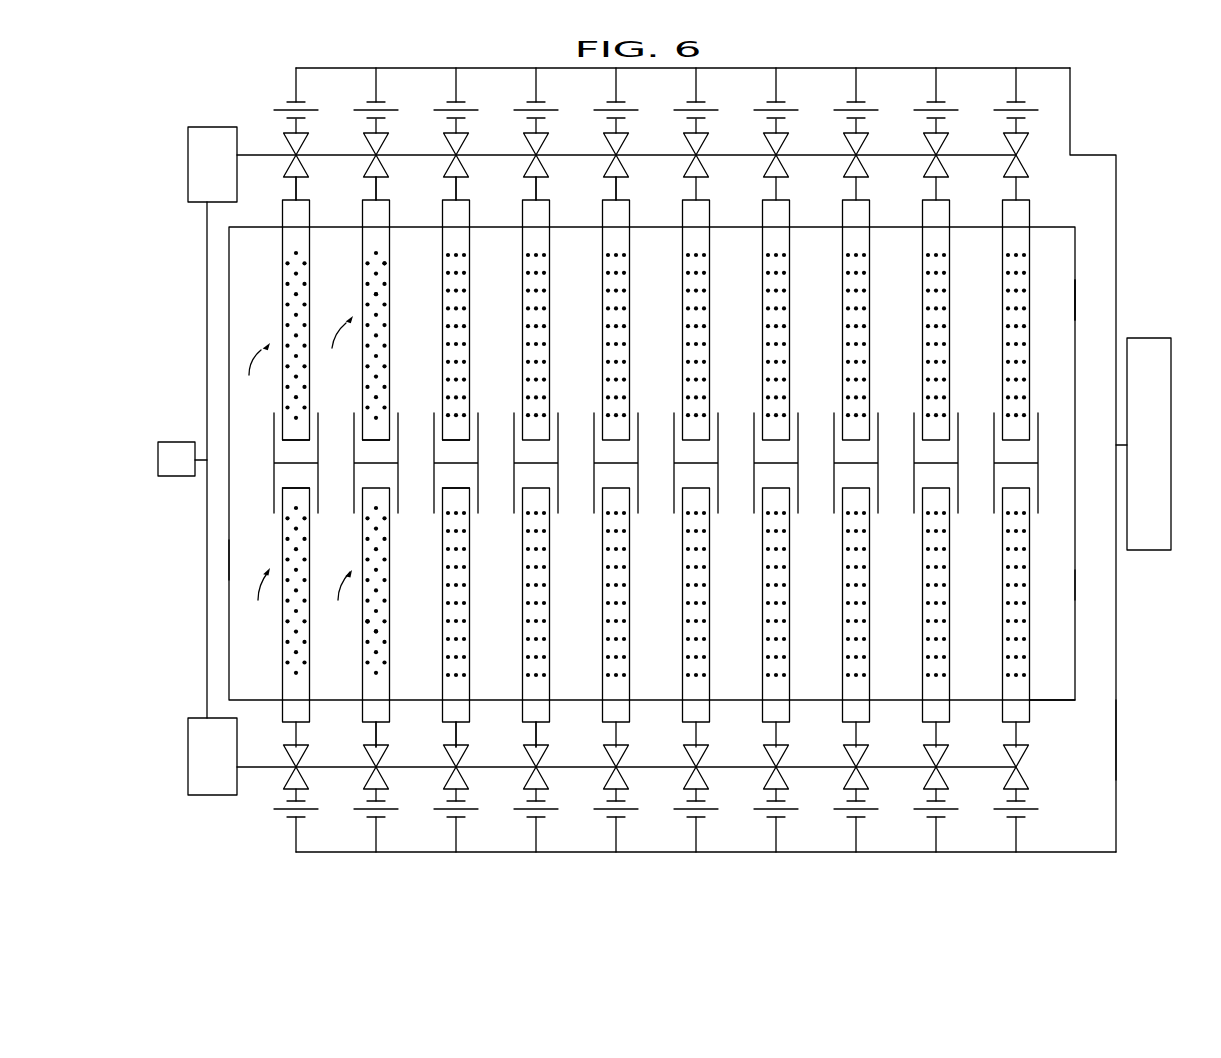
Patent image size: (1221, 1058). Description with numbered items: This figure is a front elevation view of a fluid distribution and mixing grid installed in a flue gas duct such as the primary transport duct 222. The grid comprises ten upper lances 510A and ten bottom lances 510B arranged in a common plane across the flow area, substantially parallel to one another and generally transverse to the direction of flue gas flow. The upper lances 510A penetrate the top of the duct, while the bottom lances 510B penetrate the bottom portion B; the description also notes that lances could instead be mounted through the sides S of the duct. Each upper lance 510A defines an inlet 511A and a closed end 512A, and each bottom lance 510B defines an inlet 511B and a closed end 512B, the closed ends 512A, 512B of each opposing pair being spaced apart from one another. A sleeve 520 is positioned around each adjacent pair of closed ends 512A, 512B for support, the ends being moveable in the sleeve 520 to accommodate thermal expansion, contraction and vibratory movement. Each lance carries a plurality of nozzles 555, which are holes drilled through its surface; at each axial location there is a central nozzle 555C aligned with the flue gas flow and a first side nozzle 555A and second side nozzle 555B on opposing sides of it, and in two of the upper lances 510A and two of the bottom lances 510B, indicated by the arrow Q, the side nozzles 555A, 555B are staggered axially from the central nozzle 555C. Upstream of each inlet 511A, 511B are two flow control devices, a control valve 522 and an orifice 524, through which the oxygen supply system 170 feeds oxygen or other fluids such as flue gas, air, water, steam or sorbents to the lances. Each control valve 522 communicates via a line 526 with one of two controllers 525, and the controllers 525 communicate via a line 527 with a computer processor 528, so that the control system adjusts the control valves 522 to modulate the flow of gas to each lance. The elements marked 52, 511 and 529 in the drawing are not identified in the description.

The substrate processing apparatus 52 is at (1116, 732).
The oxygen supply system 170 is at (1144, 338).
The primary transport duct 222 is at (1078, 298).
The upper lances 510A is at (282, 318).
The bottom lances 510B is at (283, 643).
The gas distribution housing 511 is at (1042, 227).
The inlet 511A is at (302, 202).
The inlet 511B is at (388, 722).
The closed end 512A is at (298, 442).
The closed end 512B is at (283, 485).
The sleeve 520 is at (318, 475).
The control valve 522 is at (288, 147).
The orifice 524 is at (282, 103).
The controller 525 is at (188, 155).
The line 526 is at (332, 155).
The line 527 is at (207, 288).
The computer processor 528 is at (180, 442).
The exhaust line 529 is at (1116, 190).
The nozzles 555 is at (310, 291).
The first side nozzle 555A is at (367, 622).
The second side nozzle 555B is at (383, 263).
The central nozzle 555C is at (377, 295).
The arrow Q is at (297, 470).
The sides S is at (229, 560).
The bottom portion B is at (1052, 702).